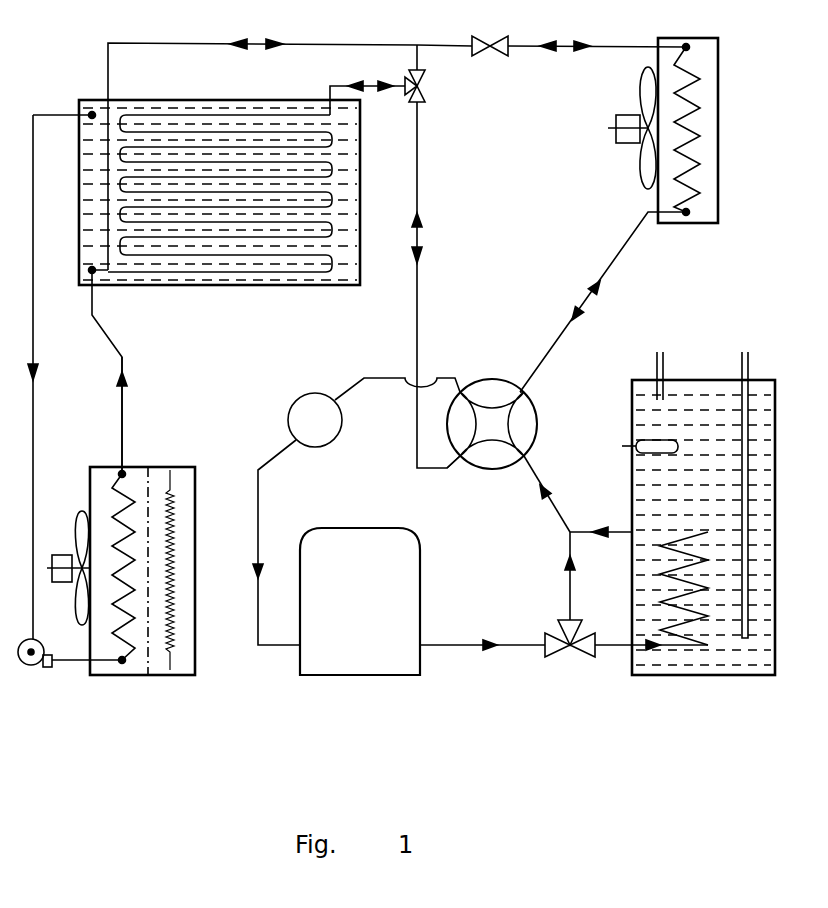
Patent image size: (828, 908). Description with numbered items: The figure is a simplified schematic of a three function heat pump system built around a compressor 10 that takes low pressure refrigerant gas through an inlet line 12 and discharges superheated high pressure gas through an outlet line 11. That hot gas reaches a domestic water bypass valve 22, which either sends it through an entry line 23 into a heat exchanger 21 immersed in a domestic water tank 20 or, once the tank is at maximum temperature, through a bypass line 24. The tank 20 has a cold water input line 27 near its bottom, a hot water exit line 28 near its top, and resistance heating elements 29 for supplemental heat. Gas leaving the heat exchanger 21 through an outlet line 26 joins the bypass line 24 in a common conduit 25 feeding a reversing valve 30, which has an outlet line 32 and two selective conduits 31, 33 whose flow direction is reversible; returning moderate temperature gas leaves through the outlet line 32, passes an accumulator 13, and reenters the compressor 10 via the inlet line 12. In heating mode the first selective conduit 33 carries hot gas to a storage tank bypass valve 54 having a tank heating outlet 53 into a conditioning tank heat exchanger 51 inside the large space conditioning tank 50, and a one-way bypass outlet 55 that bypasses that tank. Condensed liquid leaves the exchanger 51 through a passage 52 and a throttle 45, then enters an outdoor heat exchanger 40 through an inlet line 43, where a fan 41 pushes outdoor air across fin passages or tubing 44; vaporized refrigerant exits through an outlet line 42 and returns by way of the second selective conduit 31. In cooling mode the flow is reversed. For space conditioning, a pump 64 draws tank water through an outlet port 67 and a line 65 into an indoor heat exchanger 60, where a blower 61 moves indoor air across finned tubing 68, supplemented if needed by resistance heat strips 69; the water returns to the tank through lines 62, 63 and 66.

The compressor 10 is at (338, 667).
The outlet line 11 is at (449, 628).
The inlet line 12 is at (287, 628).
The accumulator 13 is at (330, 435).
The domestic water tank 20 is at (686, 508).
The heat exchanger 21 is at (688, 628).
The domestic water bypass valve 22 is at (580, 650).
The entry line 23 is at (628, 650).
The bypass line 24 is at (570, 577).
The common conduit 25 is at (552, 512).
The outlet line 26 is at (580, 530).
The cold water input line 27 is at (762, 494).
The hot water exit line 28 is at (677, 375).
The resistance heating elements 29 is at (646, 441).
The reversing valve 30 is at (504, 437).
The second selective conduit 31 is at (527, 371).
The outlet line 32 is at (401, 375).
The first selective conduit 33 is at (444, 476).
The outdoor heat exchanger 40 is at (719, 186).
The fan 41 is at (630, 142).
The outlet line 42 is at (630, 241).
The inlet line 43 is at (632, 48).
The fin passages or tubing 44 is at (690, 120).
The throttle 45 is at (484, 56).
The space conditioning tank 50 is at (285, 286).
The conditioning tank heat exchanger 51 is at (307, 193).
The passage 52 is at (108, 70).
The tank heating outlet 53 is at (328, 95).
The storage tank bypass valve 54 is at (421, 116).
The bypass outlet 55 is at (403, 59).
The indoor heat exchanger 60 is at (138, 676).
The blower 61 is at (68, 559).
The liquid line 62 is at (88, 655).
The liquid line 63 is at (122, 433).
The pump 64 is at (46, 634).
The line 65 is at (33, 446).
The storage tank outlet 66 is at (94, 320).
The outlet port 67 is at (72, 115).
The finned tubing 68 is at (125, 560).
The resistance heat strips 69 is at (172, 650).